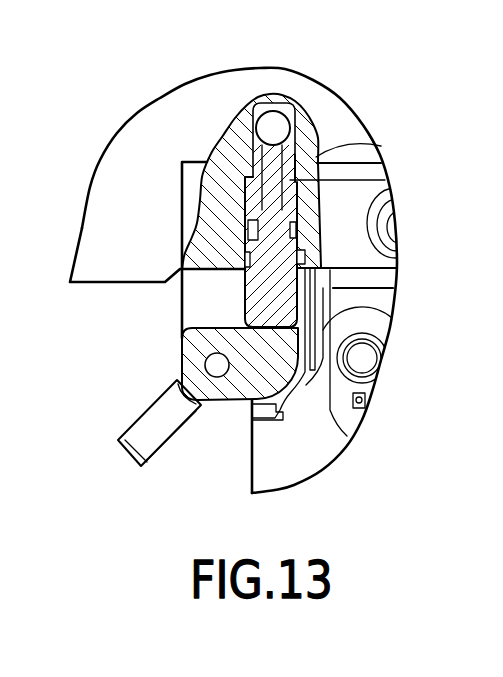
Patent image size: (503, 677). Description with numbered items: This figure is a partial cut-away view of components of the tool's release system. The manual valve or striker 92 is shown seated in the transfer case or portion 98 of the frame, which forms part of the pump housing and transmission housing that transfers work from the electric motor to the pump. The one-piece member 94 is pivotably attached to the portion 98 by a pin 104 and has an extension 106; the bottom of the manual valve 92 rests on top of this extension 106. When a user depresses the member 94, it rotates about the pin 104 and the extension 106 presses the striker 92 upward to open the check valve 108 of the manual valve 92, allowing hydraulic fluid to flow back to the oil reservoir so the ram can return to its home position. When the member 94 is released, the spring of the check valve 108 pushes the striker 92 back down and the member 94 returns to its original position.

The manual valve 92 is at (380, 146).
The member 94 is at (132, 418).
The transfer case portion of the frame 98 is at (305, 465).
The pin 104 is at (210, 358).
The extension 106 is at (280, 352).
The check valve 108 is at (277, 110).